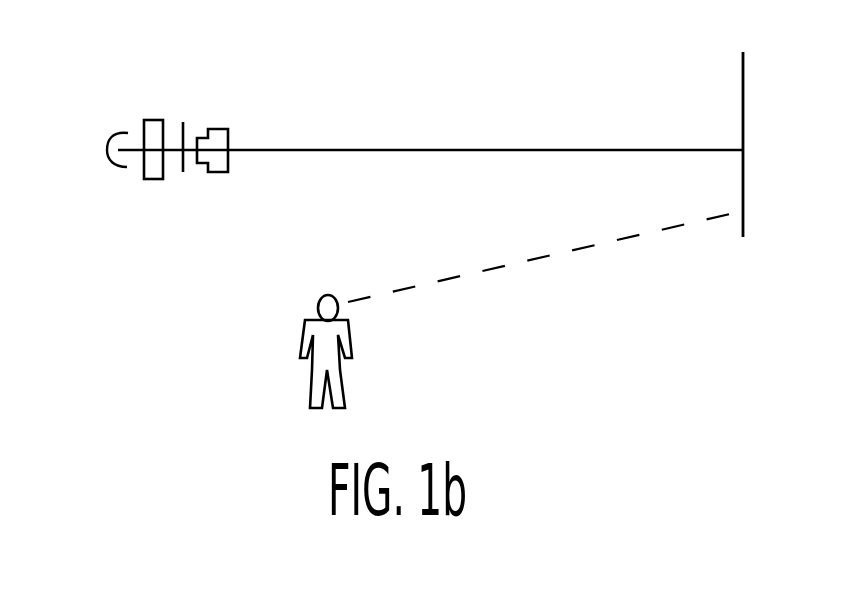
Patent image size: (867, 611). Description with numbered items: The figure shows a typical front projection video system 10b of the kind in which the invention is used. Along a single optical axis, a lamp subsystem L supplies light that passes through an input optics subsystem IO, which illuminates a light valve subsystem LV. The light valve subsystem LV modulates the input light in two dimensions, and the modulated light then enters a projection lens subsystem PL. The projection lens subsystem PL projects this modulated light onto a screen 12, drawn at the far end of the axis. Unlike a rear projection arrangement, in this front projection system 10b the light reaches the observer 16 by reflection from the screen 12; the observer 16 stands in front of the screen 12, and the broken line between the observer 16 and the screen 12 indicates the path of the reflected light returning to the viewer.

The front projection system 10b is at (235, 75).
The screen 12 is at (742, 98).
The observer 16 is at (308, 323).
The lamp subsystem L is at (125, 168).
The input optics subsystem IO is at (142, 179).
The light valve subsystem LV is at (183, 172).
The projection lens subsystem PL is at (220, 172).